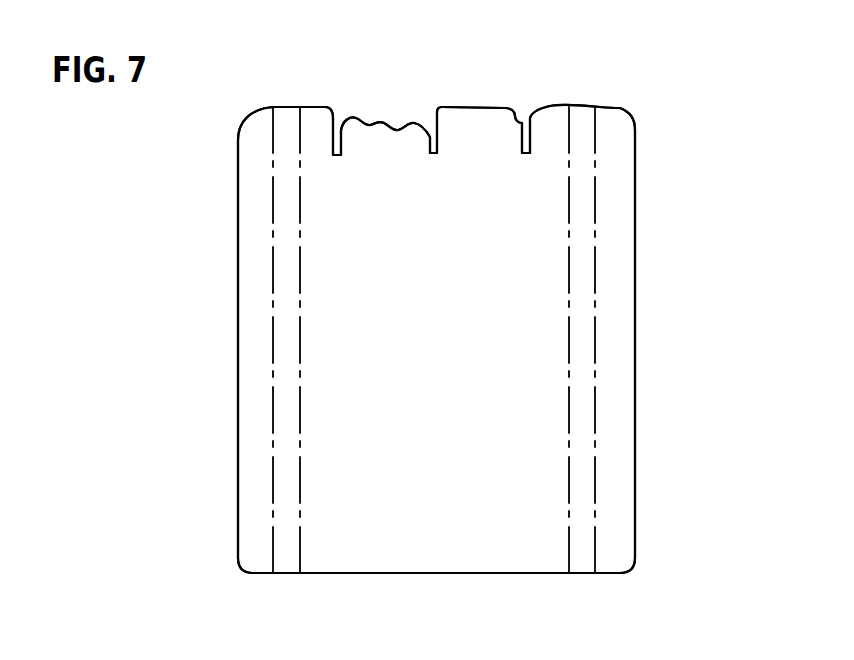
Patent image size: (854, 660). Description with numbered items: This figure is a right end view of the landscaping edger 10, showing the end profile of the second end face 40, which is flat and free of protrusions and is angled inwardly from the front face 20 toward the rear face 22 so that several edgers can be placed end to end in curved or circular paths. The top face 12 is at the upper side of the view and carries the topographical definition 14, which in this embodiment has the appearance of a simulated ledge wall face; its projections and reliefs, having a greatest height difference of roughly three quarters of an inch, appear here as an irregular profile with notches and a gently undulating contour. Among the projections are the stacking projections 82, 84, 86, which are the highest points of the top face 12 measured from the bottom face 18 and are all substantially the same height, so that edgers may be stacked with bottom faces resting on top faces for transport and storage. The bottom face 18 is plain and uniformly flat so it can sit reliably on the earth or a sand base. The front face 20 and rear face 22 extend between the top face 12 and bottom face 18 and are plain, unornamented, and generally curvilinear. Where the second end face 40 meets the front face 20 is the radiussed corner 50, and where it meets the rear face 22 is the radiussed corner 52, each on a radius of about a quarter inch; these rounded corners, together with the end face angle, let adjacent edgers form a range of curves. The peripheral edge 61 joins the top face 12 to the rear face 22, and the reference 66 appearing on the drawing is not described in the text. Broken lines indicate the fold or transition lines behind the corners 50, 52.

The landscaping edger 10 is at (617, 63).
The top face 12 is at (331, 87).
The topographical definition 14 is at (443, 98).
The bottom face 18 is at (443, 575).
The front face 20 is at (636, 354).
The rear face 22 is at (238, 366).
The second end face 40 is at (445, 385).
The corner 50 is at (585, 560).
The corner 52 is at (286, 564).
The peripheral edge 61 is at (241, 135).
The top right corner 66 is at (634, 123).
The stacking projection 82 is at (303, 107).
The stacking projection 84 is at (472, 105).
The stacking projection 86 is at (547, 105).